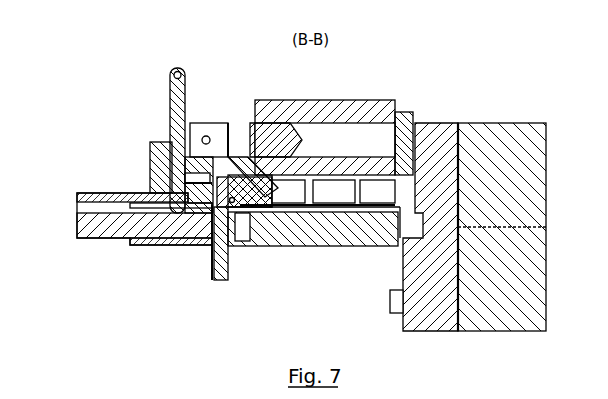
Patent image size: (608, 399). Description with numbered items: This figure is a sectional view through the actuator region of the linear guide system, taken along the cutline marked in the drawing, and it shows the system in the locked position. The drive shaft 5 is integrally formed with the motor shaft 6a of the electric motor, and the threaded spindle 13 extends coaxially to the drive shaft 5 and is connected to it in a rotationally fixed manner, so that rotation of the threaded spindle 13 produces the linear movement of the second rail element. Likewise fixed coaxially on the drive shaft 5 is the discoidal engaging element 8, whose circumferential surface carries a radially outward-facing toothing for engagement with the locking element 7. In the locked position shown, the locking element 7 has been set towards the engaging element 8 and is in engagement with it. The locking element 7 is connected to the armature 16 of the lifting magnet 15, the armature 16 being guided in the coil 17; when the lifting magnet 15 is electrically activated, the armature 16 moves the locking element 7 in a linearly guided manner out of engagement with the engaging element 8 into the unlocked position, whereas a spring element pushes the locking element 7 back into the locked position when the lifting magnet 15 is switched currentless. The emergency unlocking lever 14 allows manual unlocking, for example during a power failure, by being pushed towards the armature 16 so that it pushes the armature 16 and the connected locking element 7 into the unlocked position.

The drive shaft 5 is at (295, 248).
The motor shaft 6a is at (350, 222).
The locking element 7 is at (218, 162).
The engaging element 8 is at (215, 255).
The threaded spindle 13 is at (107, 224).
The emergency unlocking lever 14 is at (172, 108).
The lifting magnet 15 is at (248, 84).
The armature 16 is at (283, 118).
The coil 17 is at (357, 100).